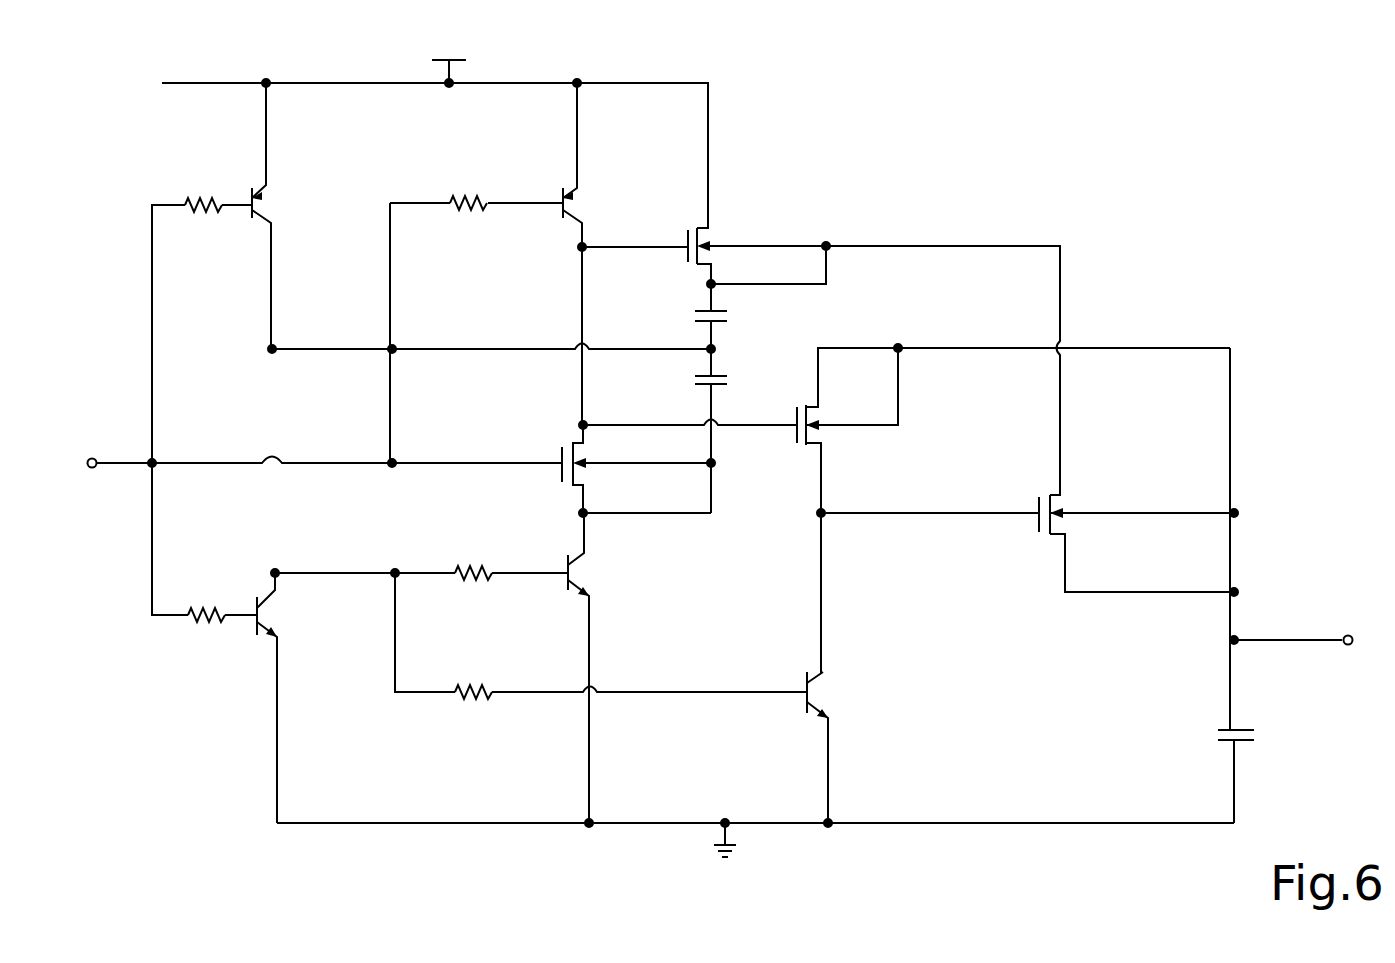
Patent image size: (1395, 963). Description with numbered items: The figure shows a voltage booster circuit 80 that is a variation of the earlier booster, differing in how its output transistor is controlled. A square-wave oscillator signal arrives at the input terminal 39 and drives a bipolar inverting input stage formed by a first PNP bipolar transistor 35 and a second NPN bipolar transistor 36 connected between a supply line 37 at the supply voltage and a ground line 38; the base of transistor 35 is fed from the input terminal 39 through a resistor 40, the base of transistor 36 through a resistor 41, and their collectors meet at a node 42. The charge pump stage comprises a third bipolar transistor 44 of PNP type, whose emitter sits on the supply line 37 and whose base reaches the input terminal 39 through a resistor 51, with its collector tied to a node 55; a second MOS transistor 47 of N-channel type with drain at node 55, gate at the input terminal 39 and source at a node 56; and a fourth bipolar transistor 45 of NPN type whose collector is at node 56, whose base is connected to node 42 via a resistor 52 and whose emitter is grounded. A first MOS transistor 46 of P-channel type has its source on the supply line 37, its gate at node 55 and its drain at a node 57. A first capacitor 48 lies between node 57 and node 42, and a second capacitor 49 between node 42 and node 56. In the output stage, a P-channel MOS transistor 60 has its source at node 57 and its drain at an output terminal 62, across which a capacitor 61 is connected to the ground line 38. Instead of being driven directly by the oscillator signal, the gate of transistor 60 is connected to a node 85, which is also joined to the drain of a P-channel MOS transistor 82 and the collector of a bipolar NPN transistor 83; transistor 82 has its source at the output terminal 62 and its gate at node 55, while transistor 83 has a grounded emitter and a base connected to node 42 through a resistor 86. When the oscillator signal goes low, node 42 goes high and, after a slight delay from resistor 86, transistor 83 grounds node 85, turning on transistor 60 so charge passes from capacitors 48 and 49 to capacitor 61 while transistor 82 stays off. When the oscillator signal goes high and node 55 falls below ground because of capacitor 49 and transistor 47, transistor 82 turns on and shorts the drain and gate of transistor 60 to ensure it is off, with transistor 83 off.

The first PNP bipolar transistor 35 is at (258, 205).
The second NPN bipolar transistor 36 is at (275, 618).
The supply line 37 is at (603, 80).
The ground line 38 is at (780, 825).
The input terminal 39 is at (90, 458).
The resistor 40 is at (195, 214).
The resistor 41 is at (198, 624).
The node 42 is at (276, 345).
The third bipolar transistor 44 is at (575, 205).
The fourth bipolar transistor 45 is at (585, 578).
The first MOS transistor 46 is at (706, 236).
The second MOS transistor 47 is at (580, 473).
The first capacitor 48 is at (727, 315).
The second capacitor 49 is at (727, 382).
The resistor 51 is at (478, 194).
The resistor 52 is at (465, 584).
The node 55 is at (578, 253).
The node 56 is at (588, 518).
The node 57 is at (829, 242).
The P-channel MOS transistor 60 is at (1062, 522).
The capacitor 61 is at (1220, 735).
The output terminal 62 is at (1350, 646).
The circuit 80 is at (1062, 206).
The P-channel MOS transistor 82 is at (822, 433).
The bipolar NPN transistor 83 is at (820, 690).
The node 85 is at (826, 518).
The resistor 86 is at (468, 702).